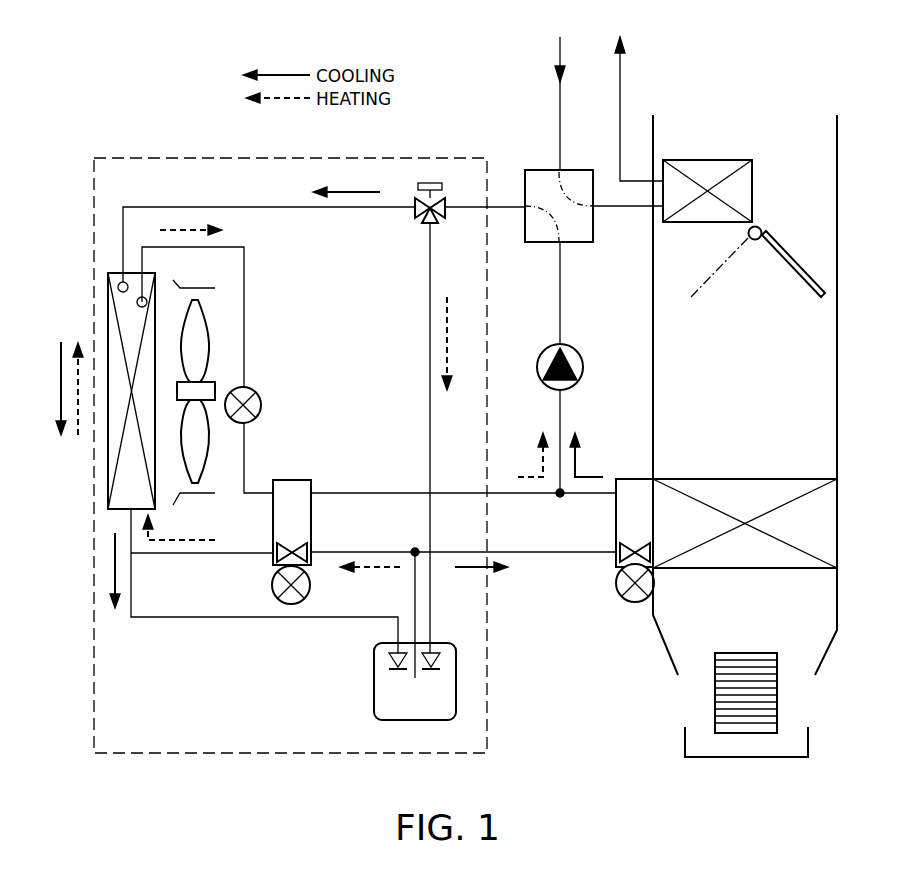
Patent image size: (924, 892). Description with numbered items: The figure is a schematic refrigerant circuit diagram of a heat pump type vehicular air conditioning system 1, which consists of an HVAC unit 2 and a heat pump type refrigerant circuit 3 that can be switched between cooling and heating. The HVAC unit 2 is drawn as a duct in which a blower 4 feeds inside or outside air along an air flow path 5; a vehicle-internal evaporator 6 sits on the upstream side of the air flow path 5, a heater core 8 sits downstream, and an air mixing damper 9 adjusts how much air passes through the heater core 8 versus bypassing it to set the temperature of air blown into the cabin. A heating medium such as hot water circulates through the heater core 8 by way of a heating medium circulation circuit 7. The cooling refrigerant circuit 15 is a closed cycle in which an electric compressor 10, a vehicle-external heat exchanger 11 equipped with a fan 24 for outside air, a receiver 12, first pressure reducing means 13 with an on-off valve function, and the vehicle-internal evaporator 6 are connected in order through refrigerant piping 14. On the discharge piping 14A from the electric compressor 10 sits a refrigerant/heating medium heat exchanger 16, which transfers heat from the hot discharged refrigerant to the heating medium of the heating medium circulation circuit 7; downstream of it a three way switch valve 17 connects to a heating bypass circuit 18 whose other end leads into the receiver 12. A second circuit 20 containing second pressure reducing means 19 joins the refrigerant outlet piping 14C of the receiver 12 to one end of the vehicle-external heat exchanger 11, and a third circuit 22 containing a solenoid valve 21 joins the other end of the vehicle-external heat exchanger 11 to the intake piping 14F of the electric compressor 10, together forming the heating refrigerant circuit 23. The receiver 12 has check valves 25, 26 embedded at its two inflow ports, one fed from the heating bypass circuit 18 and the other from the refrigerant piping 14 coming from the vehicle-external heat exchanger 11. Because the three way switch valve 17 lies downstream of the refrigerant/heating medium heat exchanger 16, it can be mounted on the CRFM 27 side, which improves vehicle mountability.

The heat pump type vehicular air conditioning system 1 is at (423, 78).
The HVAC unit 2 is at (850, 352).
The heat pump type refrigerant circuit 3 is at (164, 185).
The blower 4 is at (777, 695).
The air flow path 5 is at (805, 398).
The vehicle-internal evaporator 6 is at (825, 520).
The heating medium circulation circuit 7 is at (562, 125).
The heater core 8 is at (706, 160).
The air mixing damper 9 is at (795, 268).
The electric compressor 10 is at (584, 367).
The vehicle-external heat exchanger 11 is at (108, 475).
The receiver 12 is at (456, 705).
The first pressure reducing means 13 is at (616, 520).
The refrigerant piping 14 is at (233, 207).
The discharge piping 14A is at (562, 292).
The refrigerant outlet piping 14C is at (415, 595).
The intake piping 14F is at (562, 418).
The cooling refrigerant circuit 15 is at (262, 629).
The refrigerant/heating medium heat exchanger 16 is at (532, 170).
The three way switch valve 17 is at (437, 183).
The heating bypass circuit 18 is at (430, 357).
The second pressure reducing means 19 is at (311, 520).
The second circuit 20 is at (190, 553).
The solenoid valve 21 is at (262, 404).
The third circuit 22 is at (244, 305).
The heating refrigerant circuit 23 is at (256, 270).
The fan 24 is at (197, 340).
The check valve 25 is at (441, 658).
The check valve 26 is at (390, 660).
The CRFM 27 is at (93, 648).